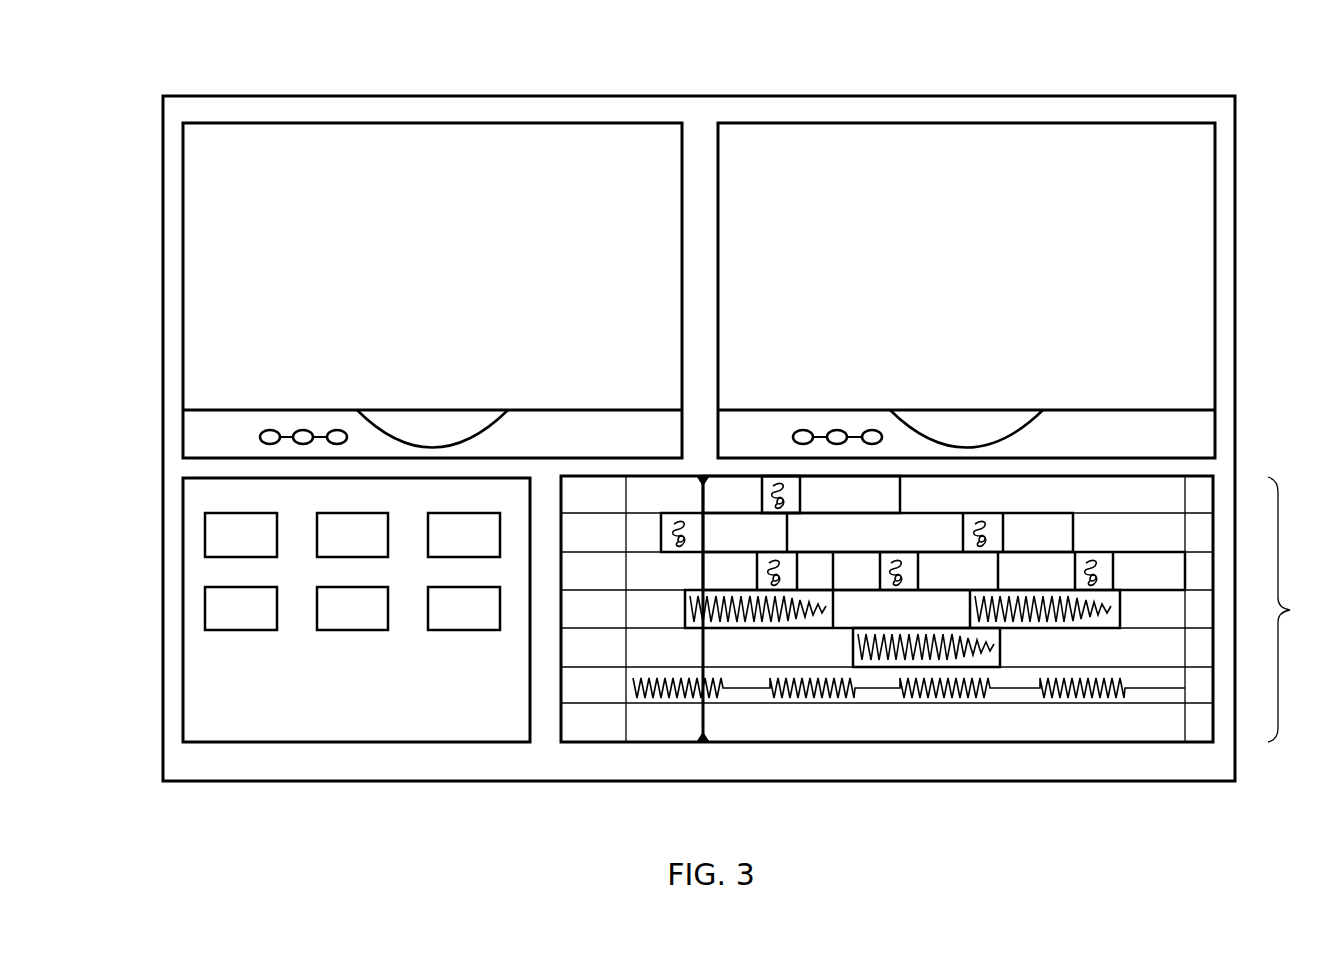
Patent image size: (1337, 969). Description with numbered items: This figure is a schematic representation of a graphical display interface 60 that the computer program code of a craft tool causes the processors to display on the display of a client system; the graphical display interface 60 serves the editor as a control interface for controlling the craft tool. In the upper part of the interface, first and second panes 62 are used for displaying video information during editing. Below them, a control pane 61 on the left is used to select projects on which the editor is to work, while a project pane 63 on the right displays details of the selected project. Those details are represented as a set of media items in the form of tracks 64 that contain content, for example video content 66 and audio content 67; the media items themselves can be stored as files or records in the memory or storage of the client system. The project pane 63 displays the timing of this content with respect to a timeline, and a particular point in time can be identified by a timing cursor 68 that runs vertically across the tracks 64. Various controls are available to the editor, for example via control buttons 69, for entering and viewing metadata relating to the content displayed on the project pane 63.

The graphical display interface 60 is at (308, 829).
The control pane 61 is at (200, 613).
The first and second panes 62 is at (437, 152).
The project pane 63 is at (858, 722).
The tracks 64 is at (1299, 609).
The video content 66 is at (1043, 533).
The audio content 67 is at (1105, 622).
The timing cursor 68 is at (701, 742).
The control buttons 69 is at (1200, 724).